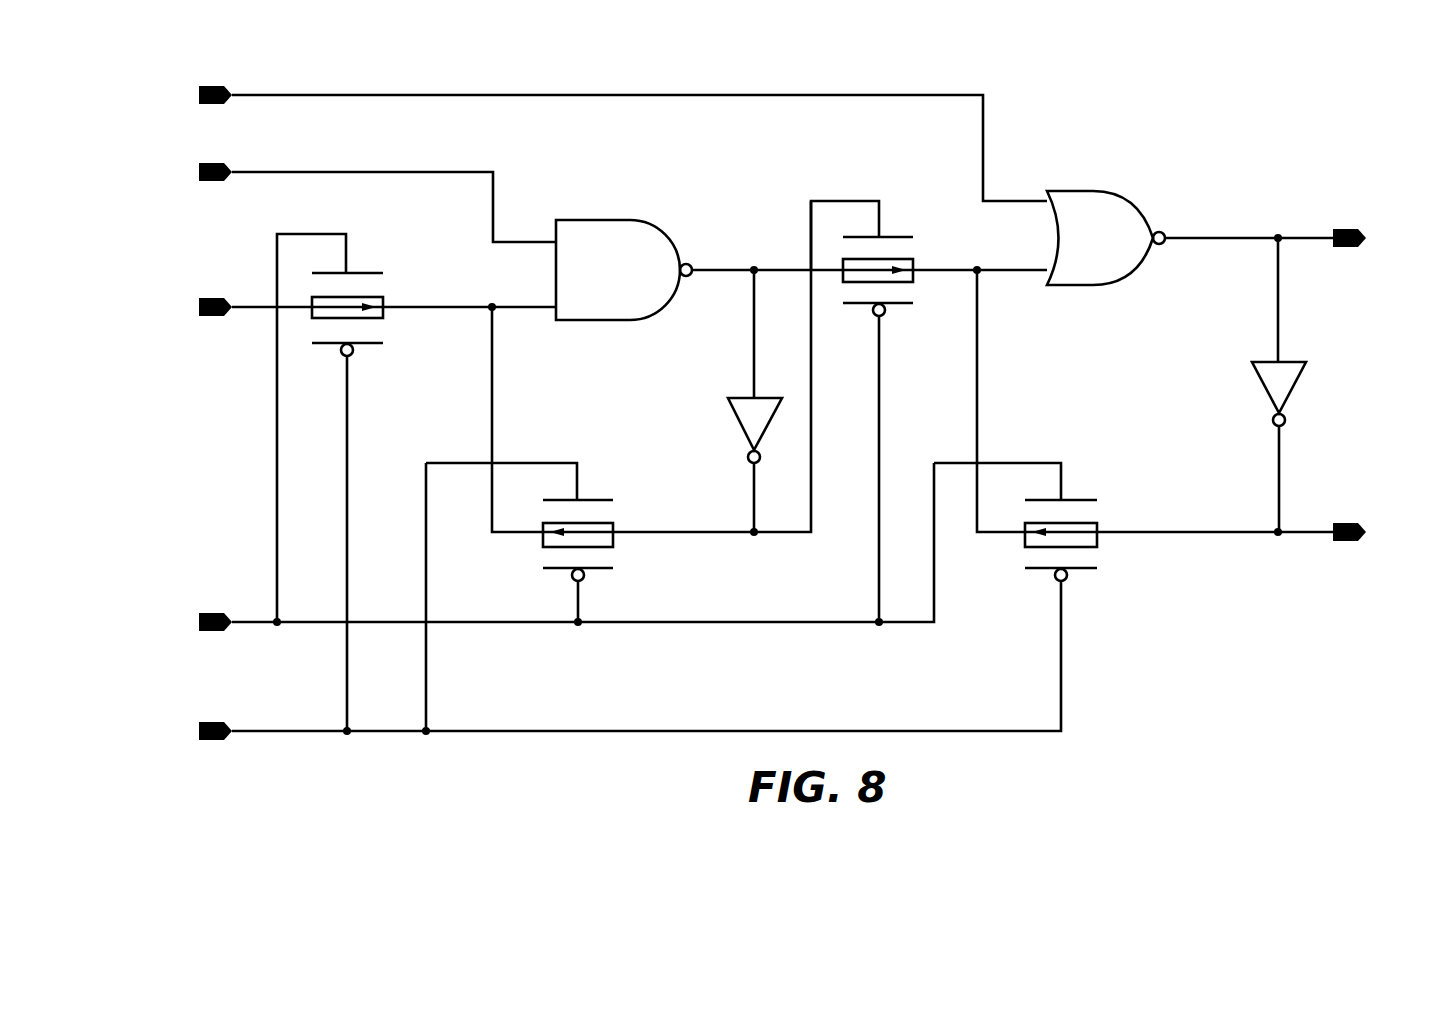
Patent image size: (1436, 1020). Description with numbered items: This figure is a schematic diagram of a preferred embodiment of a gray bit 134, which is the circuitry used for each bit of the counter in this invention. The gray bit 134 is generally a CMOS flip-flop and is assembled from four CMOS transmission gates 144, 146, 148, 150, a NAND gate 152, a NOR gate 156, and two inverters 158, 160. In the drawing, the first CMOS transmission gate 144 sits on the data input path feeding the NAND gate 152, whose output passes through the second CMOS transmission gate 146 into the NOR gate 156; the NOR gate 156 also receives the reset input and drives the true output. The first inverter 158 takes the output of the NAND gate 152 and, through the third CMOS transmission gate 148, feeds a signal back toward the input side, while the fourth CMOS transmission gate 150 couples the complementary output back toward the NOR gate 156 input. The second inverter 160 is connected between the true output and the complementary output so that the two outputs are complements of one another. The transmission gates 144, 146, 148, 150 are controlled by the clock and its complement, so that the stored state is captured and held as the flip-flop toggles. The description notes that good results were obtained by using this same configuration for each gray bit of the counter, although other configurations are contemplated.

The gray bit 134 is at (1222, 97).
The CMOS transmission gate 144 is at (383, 297).
The CMOS transmission gate 146 is at (913, 262).
The CMOS transmission gate 148 is at (613, 523).
The CMOS transmission gate 150 is at (1097, 523).
The NAND gate 152 is at (665, 234).
The NOR gate 156 is at (1093, 191).
The inverter 158 is at (740, 425).
The inverter 160 is at (1293, 392).